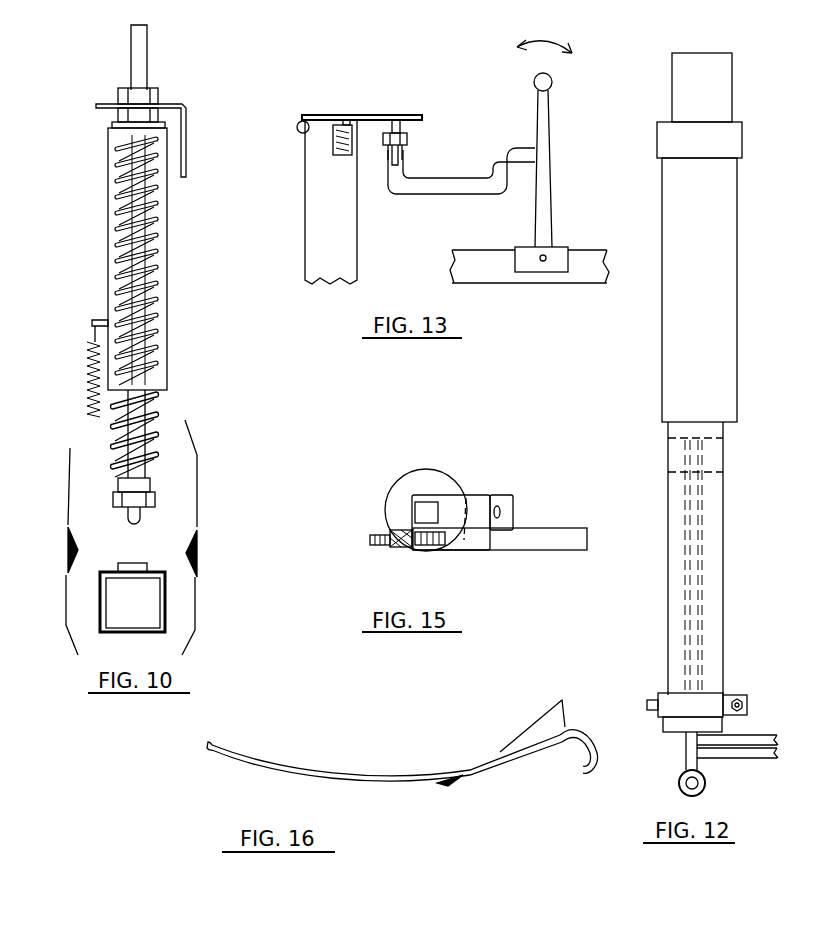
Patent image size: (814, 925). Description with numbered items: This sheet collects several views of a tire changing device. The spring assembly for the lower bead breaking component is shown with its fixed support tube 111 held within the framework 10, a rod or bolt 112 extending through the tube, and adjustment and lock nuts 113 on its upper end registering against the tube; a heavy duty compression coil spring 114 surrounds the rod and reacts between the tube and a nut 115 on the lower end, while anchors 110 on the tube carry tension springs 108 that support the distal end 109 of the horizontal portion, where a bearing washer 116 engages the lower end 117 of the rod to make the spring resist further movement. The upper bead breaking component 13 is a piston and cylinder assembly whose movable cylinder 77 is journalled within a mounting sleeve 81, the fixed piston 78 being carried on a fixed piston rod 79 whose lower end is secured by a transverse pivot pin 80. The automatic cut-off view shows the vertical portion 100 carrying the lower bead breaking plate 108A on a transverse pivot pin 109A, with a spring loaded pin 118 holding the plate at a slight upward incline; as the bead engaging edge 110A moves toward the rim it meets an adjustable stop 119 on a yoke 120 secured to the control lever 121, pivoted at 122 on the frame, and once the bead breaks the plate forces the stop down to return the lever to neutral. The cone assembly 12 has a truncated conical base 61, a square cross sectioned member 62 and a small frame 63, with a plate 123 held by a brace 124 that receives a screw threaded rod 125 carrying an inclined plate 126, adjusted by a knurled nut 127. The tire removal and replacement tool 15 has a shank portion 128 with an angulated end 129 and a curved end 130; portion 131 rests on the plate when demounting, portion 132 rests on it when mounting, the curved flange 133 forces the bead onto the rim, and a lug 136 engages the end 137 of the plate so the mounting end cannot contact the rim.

In FIG. 13, the supporting framework 10 is at (583, 258).
In FIG. 15, the cone assembly 12 is at (497, 492).
In FIG. 12, the upper bead breaking component 13 is at (748, 218).
In FIG. 16, the tire removal and replacement tool 15 is at (407, 763).
In FIG. 15, the truncated conical base 61 is at (432, 490).
In FIG. 15, the square cross sectioned member 62 is at (412, 510).
In FIG. 15, the small frame 63 is at (510, 512).
In FIG. 12, the movable cylinder 77 is at (718, 92).
In FIG. 12, the fixed piston 78 is at (705, 452).
In FIG. 12, the fixed piston rod 79 is at (700, 518).
In FIG. 12, the transverse pivot pin 80 is at (706, 783).
In FIG. 12, the mounting sleeve 81 is at (725, 285).
In FIG. 13, the vertical portion 100 is at (340, 240).
In FIG. 10, the tension springs 108 is at (90, 395).
In FIG. 13, the lower bead breaking plate 108A is at (355, 115).
In FIG. 10, the distal end 109 is at (160, 595).
In FIG. 13, the transverse pivot pin 109A is at (312, 92).
In FIG. 10, the anchors 110 is at (92, 322).
In FIG. 13, the bead engaging edge 110A is at (424, 115).
In FIG. 10, the fixed support tube 111 is at (108, 148).
In FIG. 10, the rod or bolt 112 is at (148, 425).
In FIG. 10, the adjustment and lock nuts 113 is at (118, 99).
In FIG. 10, the heavy duty compression coil spring 114 is at (152, 467).
In FIG. 10, the nut 115 is at (150, 498).
In FIG. 10, the bearing washer 116 is at (135, 558).
In FIG. 10, the lower end 117 is at (138, 518).
In FIG. 13, the spring loaded pin 118 is at (335, 130).
In FIG. 13, the adjustable stop 119 is at (408, 136).
In FIG. 13, the yoke 120 is at (420, 185).
In FIG. 13, the control lever 121 is at (545, 143).
In FIG. 13, the pivot 122 is at (540, 256).
In FIG. 15, the plate 123 is at (470, 546).
In FIG. 15, the brace 124 is at (400, 548).
In FIG. 15, the screw threaded rod 125 is at (370, 540).
In FIG. 15, the plate 126 is at (530, 541).
In FIG. 15, the knurled nut 127 is at (401, 531).
In FIG. 16, the shank portion 128 is at (350, 782).
In FIG. 16, the angulated end 129 is at (216, 747).
In FIG. 16, the curved end 130 is at (580, 776).
In FIG. 16, the portion 131 is at (308, 768).
In FIG. 16, the portion 132 is at (483, 770).
In FIG. 16, the curved flange 133 is at (552, 725).
In FIG. 16, the lug 136 is at (440, 786).
In FIG. 15, the end 137 is at (583, 540).